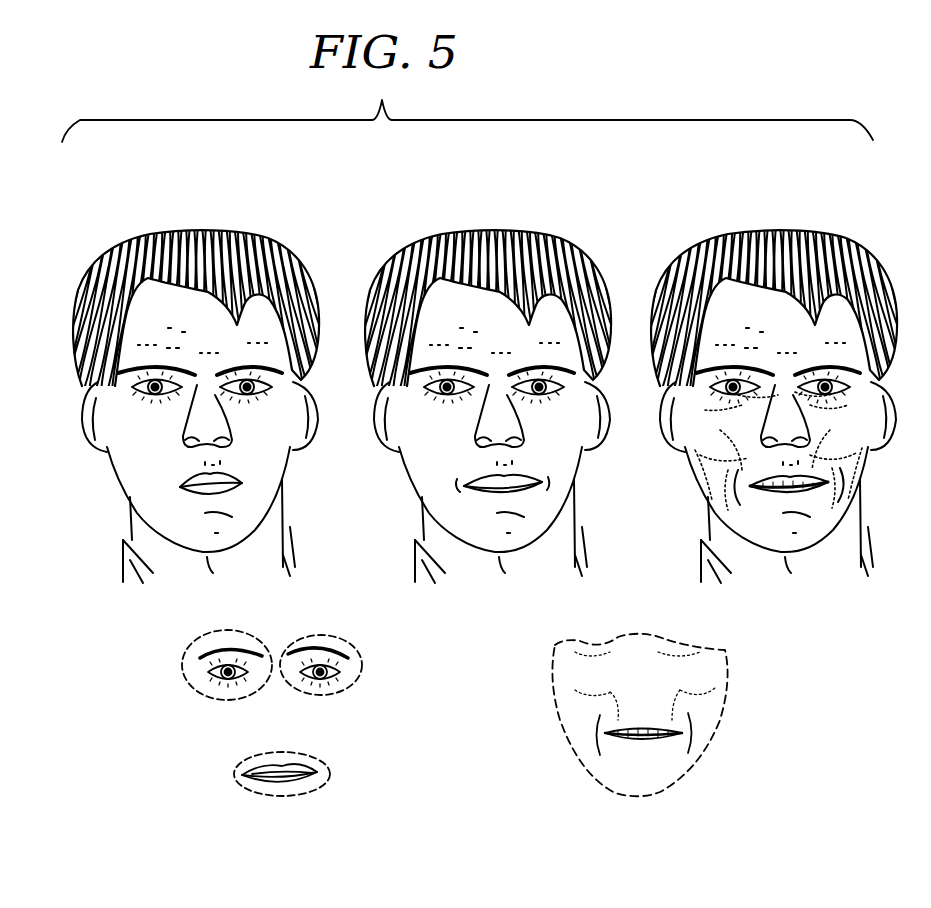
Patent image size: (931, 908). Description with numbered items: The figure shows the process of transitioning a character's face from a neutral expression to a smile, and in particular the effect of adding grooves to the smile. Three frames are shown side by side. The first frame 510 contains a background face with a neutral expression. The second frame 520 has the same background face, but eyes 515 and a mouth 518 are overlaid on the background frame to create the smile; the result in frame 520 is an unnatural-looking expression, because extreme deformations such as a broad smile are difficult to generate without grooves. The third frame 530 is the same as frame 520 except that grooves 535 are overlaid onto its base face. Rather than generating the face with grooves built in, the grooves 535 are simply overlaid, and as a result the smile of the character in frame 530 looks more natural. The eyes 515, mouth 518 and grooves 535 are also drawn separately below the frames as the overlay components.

The frame 510 is at (207, 232).
The frame 520 is at (495, 232).
The frame 530 is at (790, 230).
The eyes 515 is at (243, 645).
The mouth 518 is at (305, 763).
The grooves 535 is at (672, 762).